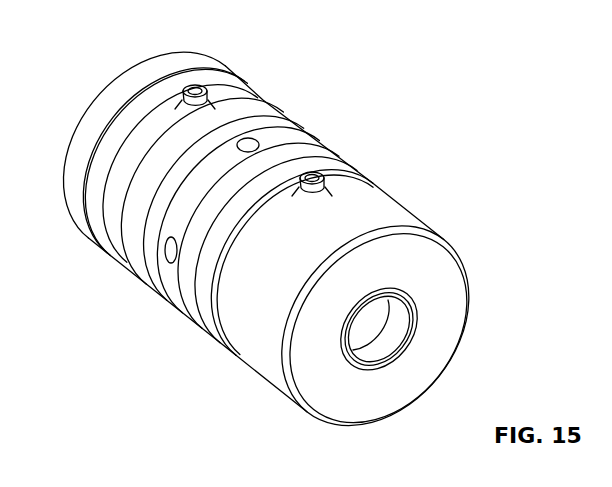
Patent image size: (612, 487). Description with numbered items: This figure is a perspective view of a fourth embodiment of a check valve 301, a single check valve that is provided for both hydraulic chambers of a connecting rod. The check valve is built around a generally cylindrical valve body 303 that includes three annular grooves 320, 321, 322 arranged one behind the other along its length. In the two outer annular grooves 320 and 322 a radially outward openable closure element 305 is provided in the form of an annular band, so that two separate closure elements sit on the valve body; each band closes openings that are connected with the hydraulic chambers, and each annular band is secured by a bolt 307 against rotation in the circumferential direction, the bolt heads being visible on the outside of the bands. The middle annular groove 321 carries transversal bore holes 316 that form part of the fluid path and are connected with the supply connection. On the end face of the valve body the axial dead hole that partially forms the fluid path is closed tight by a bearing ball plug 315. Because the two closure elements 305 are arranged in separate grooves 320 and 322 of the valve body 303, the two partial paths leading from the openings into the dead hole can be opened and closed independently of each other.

The check valve 301 is at (305, 243).
The valve body 303 is at (404, 206).
The closure element 305 is at (137, 130).
The bolt 307 is at (190, 86).
The bearing ball plug 315 is at (384, 328).
The transversal bore holes 316 is at (252, 138).
The annular groove 320 is at (103, 240).
The annular groove 321 is at (163, 283).
The annular groove 322 is at (218, 338).